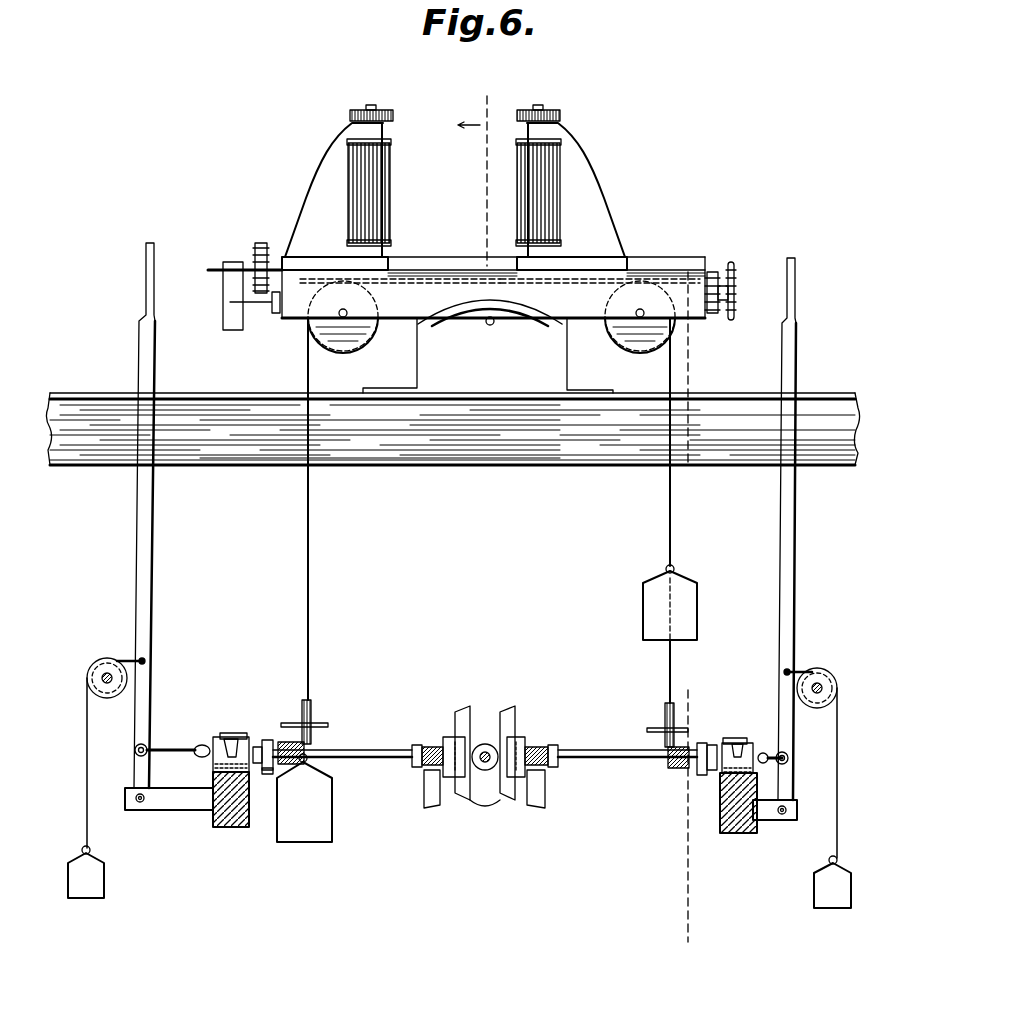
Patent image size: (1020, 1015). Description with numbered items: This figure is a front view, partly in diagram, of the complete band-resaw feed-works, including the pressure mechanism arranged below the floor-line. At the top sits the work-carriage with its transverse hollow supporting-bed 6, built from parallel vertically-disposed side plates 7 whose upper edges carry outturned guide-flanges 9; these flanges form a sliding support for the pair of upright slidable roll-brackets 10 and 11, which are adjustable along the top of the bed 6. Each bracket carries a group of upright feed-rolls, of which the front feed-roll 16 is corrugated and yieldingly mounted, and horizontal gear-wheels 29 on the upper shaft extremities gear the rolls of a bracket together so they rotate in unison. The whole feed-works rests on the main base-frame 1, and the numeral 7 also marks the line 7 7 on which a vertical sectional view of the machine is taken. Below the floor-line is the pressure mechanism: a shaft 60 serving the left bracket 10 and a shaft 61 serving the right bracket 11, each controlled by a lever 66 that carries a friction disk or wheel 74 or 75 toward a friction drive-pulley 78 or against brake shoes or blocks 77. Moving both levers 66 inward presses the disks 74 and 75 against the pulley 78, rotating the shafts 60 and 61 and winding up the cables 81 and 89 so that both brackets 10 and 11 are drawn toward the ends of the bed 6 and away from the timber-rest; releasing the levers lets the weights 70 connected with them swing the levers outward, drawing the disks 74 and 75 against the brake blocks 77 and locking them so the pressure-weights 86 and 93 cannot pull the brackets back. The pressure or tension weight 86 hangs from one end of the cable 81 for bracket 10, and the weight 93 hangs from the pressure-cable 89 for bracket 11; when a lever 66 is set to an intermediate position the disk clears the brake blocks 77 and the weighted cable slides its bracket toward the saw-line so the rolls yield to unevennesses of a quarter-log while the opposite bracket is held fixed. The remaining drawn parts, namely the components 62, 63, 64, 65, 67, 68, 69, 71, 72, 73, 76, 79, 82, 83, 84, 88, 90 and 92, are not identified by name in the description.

The main base-frame 1 is at (488, 355).
The supporting-bed 6 is at (493, 287).
The side plates 7 is at (576, 518).
The guide-flanges 9 is at (446, 263).
The roll-bracket 10 is at (307, 194).
The roll-bracket 11 is at (598, 211).
The front upright feed-roll 16 is at (400, 186).
The horizontal gear-wheels 29 is at (401, 108).
The shaft 60 is at (386, 758).
The shaft 61 is at (609, 758).
The cap 62 is at (233, 733).
The bearing block 63 is at (213, 768).
The base block 64 is at (227, 829).
The lever 65 is at (168, 748).
The levers 66 is at (141, 540).
The pivot 67 is at (140, 804).
The bracket 68 is at (190, 805).
The cord 69 is at (86, 752).
The weights 70 is at (98, 882).
The pulley 71 is at (99, 673).
The plate 72 is at (268, 775).
The clamp 73 is at (259, 740).
The friction disk or wheel 74 is at (469, 708).
The friction disk or wheel 75 is at (514, 709).
The connector 76 is at (468, 805).
The brake shoes or blocks 77 is at (451, 800).
The friction drive-pulley 78 is at (485, 771).
The disc 79 is at (485, 744).
The cable 81 is at (305, 640).
The slider 82 is at (310, 710).
The drum 83 is at (350, 306).
The drum lower portion 84 is at (343, 340).
The pressure or tension weight 86 is at (690, 610).
The guide 88 is at (387, 286).
The pressure-cable 89 is at (668, 652).
The guide 90 is at (523, 288).
The slider 92 is at (665, 718).
The weight 93 is at (318, 832).